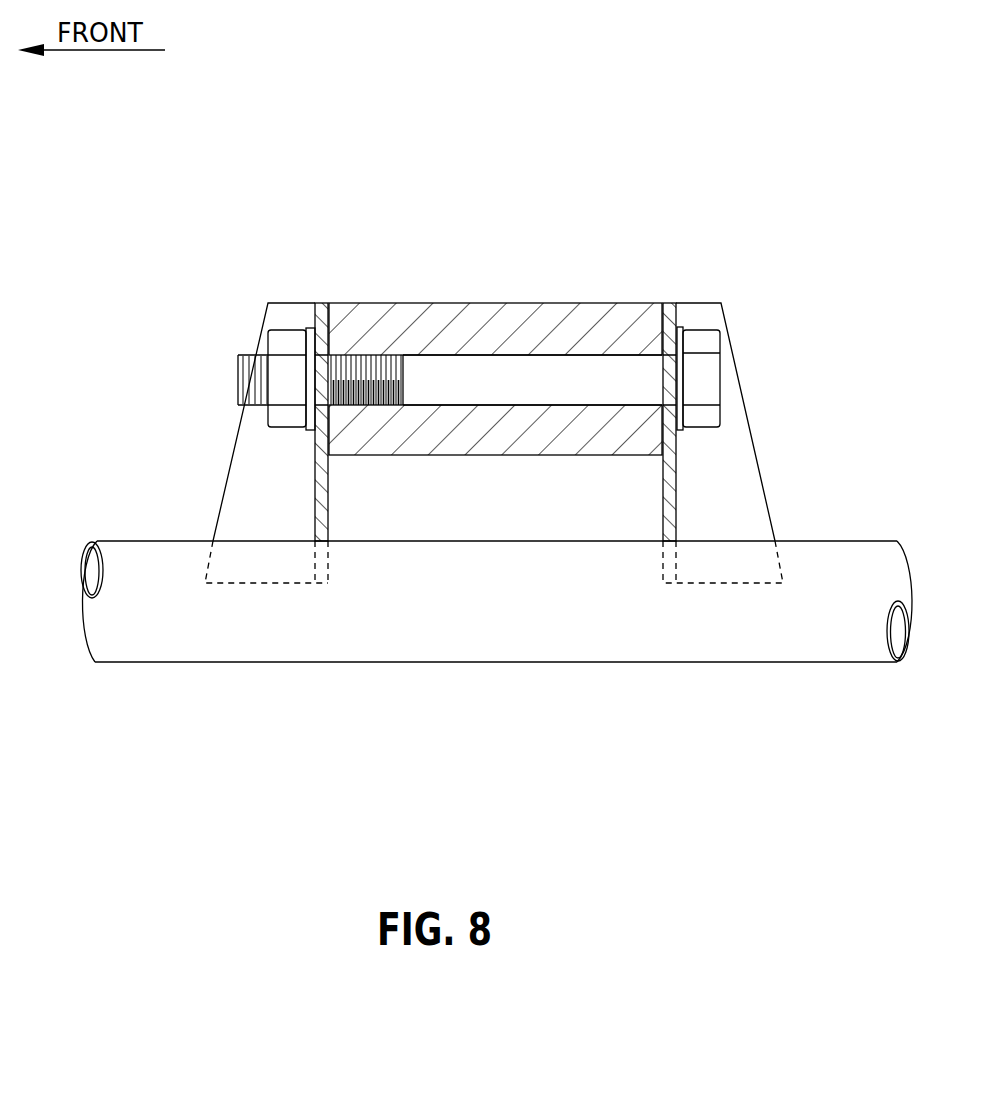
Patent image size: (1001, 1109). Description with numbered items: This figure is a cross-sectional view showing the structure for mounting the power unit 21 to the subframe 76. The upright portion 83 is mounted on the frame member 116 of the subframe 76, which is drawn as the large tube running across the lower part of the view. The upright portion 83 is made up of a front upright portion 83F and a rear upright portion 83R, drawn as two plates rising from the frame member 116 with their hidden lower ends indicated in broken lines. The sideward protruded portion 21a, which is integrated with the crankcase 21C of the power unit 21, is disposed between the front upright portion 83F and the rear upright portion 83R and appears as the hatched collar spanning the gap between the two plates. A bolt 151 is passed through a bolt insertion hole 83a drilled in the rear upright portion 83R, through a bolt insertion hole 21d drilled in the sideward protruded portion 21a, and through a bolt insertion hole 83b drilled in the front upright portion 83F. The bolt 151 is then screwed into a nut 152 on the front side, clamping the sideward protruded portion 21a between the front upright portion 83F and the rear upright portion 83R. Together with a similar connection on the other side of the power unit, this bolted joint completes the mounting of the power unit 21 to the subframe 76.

The power unit 21 is at (495, 339).
The sideward protruded portion 21a is at (512, 315).
The crankcase 21C is at (585, 302).
The bolt insertion hole 21d is at (500, 405).
The upright portion 83 is at (469, 403).
The front upright portion 83F is at (230, 503).
The rear upright portion 83R is at (735, 476).
The bolt insertion hole 83a is at (678, 352).
The bolt insertion hole 83b is at (322, 355).
The bolt 151 is at (708, 378).
The nut 152 is at (287, 337).
The frame member 116 is at (413, 650).
The subframe 76 is at (218, 665).